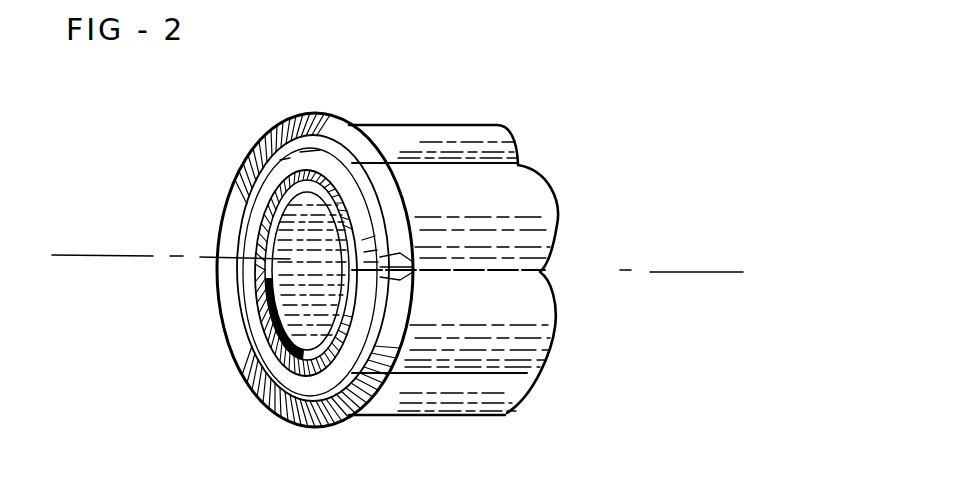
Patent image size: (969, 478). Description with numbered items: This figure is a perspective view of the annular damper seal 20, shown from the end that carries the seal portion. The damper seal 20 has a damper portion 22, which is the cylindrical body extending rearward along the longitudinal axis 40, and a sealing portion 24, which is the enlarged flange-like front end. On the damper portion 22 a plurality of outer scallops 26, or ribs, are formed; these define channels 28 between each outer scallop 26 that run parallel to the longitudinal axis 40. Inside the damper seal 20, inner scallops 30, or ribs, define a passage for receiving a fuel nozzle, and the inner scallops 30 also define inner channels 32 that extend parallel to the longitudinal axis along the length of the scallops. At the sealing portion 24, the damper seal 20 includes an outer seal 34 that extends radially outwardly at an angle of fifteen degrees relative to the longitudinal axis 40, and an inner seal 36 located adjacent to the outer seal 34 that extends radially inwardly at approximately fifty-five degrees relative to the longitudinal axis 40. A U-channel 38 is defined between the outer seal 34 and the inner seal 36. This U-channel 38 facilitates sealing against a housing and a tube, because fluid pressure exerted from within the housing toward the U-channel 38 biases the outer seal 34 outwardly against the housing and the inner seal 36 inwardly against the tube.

The damper seal 20 is at (327, 113).
The damper portion 22 is at (424, 126).
The sealing portion 24 is at (216, 297).
The outer scallops 26 is at (495, 148).
The channels 28 is at (548, 278).
The inner scallops 30 is at (300, 217).
The inner channels 32 is at (282, 252).
The outer seal 34 is at (270, 116).
The inner seal 36 is at (254, 322).
The U-channel 38 is at (252, 142).
The longitudinal axis 40 is at (652, 271).